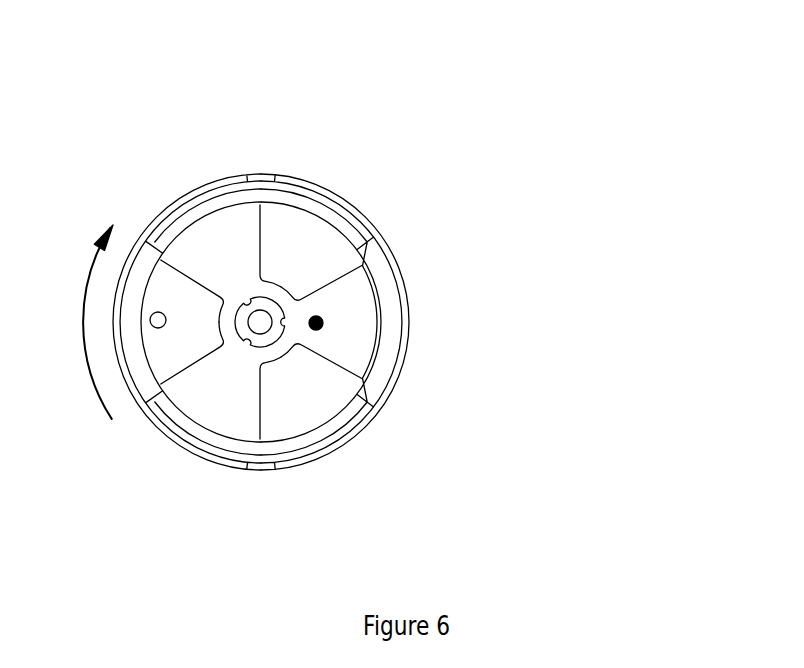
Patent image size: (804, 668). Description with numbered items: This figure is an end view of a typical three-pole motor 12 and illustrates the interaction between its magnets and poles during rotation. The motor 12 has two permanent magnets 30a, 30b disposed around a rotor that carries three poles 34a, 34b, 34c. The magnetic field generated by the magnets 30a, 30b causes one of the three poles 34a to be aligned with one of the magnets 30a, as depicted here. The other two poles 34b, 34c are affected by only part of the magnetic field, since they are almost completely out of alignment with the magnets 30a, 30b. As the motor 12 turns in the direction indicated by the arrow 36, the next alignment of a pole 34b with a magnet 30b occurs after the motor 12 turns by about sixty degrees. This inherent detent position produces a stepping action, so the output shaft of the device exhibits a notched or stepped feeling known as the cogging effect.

The motor 12 is at (361, 55).
The permanent magnet 30a is at (390, 303).
The permanent magnet 30b is at (143, 383).
The pole 34a is at (345, 320).
The pole 34b is at (233, 378).
The pole 34c is at (247, 238).
The arrow 36 is at (82, 348).